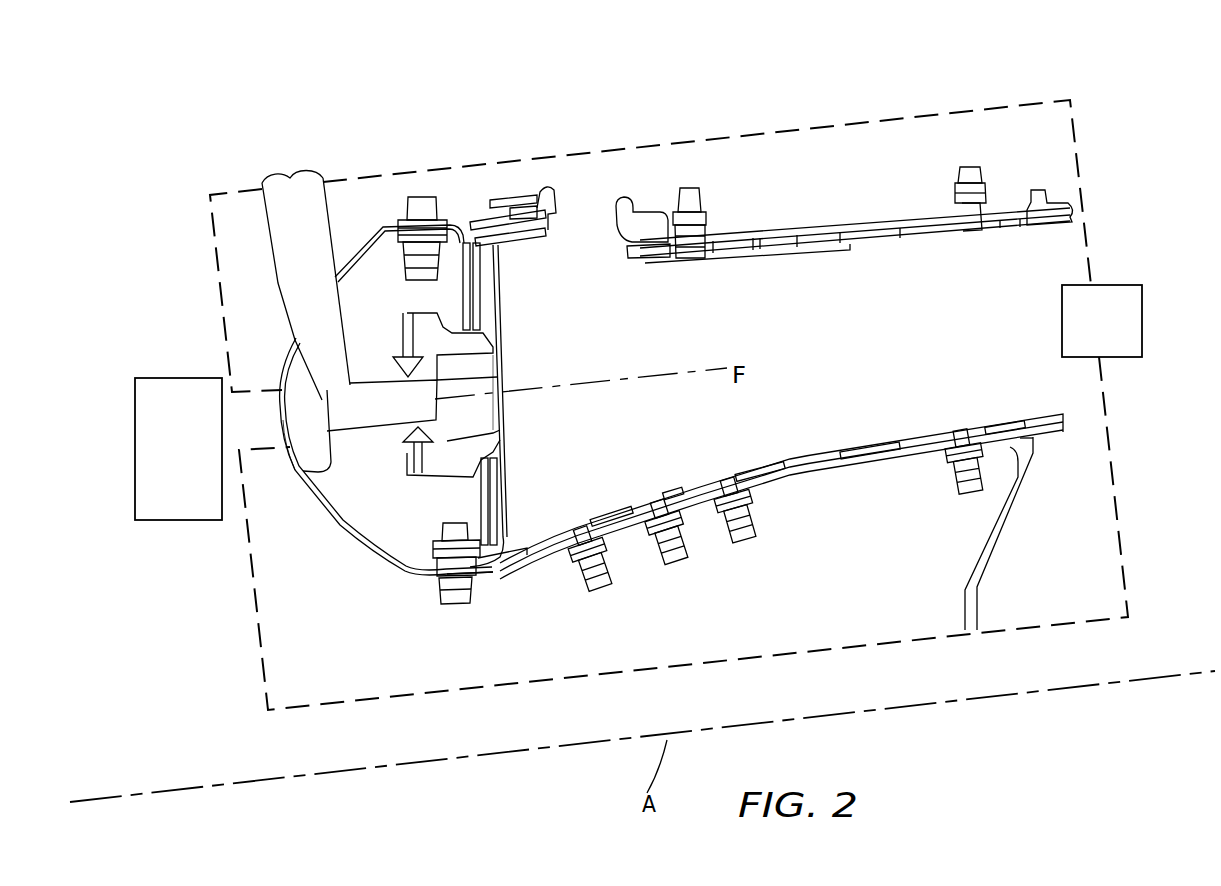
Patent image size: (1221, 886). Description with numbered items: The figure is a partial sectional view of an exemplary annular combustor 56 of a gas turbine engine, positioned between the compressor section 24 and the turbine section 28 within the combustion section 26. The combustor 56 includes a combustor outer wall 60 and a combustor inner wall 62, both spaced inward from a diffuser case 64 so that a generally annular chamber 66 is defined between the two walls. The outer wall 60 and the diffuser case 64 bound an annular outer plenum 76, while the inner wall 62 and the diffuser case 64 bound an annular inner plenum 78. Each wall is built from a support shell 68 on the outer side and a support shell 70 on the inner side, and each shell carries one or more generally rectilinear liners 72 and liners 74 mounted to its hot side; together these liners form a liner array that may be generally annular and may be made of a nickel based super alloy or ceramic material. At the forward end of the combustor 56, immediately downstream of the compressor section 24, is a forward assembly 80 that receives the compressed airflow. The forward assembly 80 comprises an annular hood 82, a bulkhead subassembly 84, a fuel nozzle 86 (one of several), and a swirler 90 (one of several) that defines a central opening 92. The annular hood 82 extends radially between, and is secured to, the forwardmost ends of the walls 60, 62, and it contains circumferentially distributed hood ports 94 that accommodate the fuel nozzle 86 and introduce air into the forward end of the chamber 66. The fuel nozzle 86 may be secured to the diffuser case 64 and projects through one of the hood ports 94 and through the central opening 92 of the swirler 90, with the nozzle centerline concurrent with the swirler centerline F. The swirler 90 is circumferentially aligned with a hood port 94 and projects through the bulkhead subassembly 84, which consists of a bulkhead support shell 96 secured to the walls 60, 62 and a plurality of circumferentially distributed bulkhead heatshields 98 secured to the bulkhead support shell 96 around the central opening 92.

The compressor section 24 is at (191, 461).
The combustion section 26 is at (843, 104).
The turbine section 28 is at (1116, 334).
The combustor 56 is at (498, 186).
The combustor outer wall 60 is at (844, 177).
The combustor inner wall 62 is at (781, 533).
The diffuser case 64 is at (740, 658).
The chamber 66 is at (816, 343).
The support shell 68 is at (772, 232).
The support shell 70 is at (818, 482).
The liner 72 is at (885, 238).
The liner 74 is at (855, 447).
The outer plenum 76 is at (893, 157).
The inner plenum 78 is at (864, 608).
The forward assembly 80 is at (375, 436).
The annular hood 82 is at (404, 570).
The bulkhead subassembly 84 is at (523, 405).
The fuel nozzle 86 is at (321, 303).
The swirler 90 is at (525, 437).
The central opening 92 is at (510, 368).
The hood ports 94 is at (300, 473).
The bulkhead support shell 96 is at (485, 578).
The bulkhead heatshields 98 is at (510, 505).